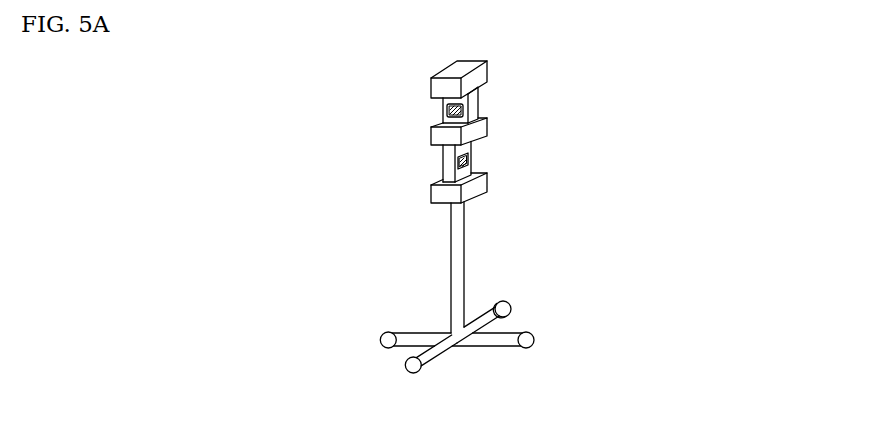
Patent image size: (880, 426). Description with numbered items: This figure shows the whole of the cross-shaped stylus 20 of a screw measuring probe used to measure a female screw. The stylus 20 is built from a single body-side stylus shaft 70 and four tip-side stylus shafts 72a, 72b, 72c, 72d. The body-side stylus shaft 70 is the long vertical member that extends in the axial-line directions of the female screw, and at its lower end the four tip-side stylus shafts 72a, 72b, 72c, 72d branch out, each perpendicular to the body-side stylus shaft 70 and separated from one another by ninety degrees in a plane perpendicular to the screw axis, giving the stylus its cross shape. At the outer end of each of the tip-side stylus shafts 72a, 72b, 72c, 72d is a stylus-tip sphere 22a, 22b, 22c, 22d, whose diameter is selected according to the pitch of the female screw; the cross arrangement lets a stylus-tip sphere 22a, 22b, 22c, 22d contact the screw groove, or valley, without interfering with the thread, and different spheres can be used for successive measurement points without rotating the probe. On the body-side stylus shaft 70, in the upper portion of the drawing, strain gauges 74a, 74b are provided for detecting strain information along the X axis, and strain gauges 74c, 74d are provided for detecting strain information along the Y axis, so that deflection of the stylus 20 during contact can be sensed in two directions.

The stylus 20 is at (645, 307).
The body-side stylus shaft 70 is at (451, 232).
The tip-side stylus shaft 72a is at (489, 316).
The tip-side stylus shaft 72b is at (443, 356).
The tip-side stylus shaft 72c is at (421, 332).
The tip-side stylus shaft 72d is at (503, 347).
The stylus-tip sphere 22a is at (511, 311).
The stylus-tip sphere 22b is at (406, 368).
The stylus-tip sphere 22c is at (380, 340).
The stylus-tip sphere 22d is at (535, 339).
The strain gauge 74a is at (516, 150).
The strain gauge 74b is at (469, 154).
The strain gauge 74c is at (516, 92).
The strain gauge 74d is at (463, 110).